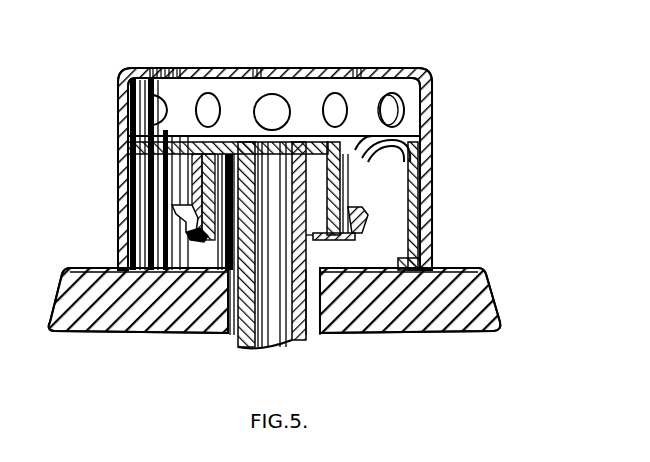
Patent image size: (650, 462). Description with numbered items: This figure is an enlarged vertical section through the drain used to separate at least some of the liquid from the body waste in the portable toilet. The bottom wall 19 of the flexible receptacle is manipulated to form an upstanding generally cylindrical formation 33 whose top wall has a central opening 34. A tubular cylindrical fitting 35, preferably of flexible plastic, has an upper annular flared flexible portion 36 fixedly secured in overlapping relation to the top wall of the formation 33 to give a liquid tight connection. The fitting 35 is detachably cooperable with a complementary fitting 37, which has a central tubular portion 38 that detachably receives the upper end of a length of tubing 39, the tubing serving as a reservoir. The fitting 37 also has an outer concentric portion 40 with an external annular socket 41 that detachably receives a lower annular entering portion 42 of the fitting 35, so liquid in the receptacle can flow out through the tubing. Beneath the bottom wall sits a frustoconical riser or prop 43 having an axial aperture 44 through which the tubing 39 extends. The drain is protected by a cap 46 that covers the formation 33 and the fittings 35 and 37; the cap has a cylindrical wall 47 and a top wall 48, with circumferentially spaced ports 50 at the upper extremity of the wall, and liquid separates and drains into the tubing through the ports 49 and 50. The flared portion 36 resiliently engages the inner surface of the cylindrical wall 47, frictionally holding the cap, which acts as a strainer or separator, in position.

The bottom wall 19 is at (294, 317).
The cylindrical formation 33 is at (350, 192).
The central opening 34 is at (430, 162).
The tubular cylindrical fitting 35 is at (428, 203).
The annular flared flexible portion 36 is at (120, 143).
The complementary fitting 37 is at (229, 137).
The central tubular portion 38 is at (292, 158).
The tubing 39 is at (248, 347).
The outer concentric portion 40 is at (200, 191).
The annular socket 41 is at (183, 232).
The lower annular entering portion 42 is at (199, 236).
The riser 43 is at (472, 322).
The axial aperture 44 is at (314, 337).
The cap 46 is at (281, 149).
The cylindrical wall 47 is at (428, 237).
The top wall 48 is at (323, 75).
The ports 49 is at (393, 110).
The ports 50 is at (186, 76).